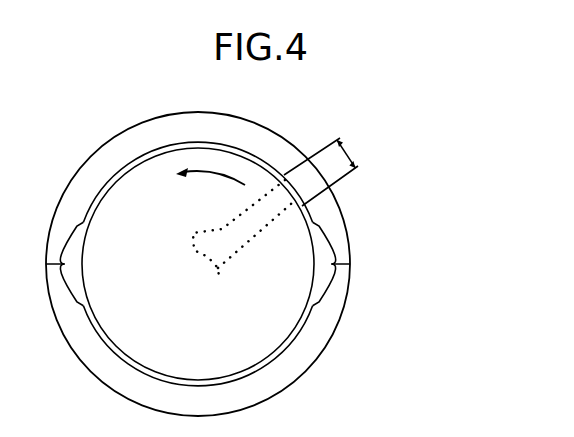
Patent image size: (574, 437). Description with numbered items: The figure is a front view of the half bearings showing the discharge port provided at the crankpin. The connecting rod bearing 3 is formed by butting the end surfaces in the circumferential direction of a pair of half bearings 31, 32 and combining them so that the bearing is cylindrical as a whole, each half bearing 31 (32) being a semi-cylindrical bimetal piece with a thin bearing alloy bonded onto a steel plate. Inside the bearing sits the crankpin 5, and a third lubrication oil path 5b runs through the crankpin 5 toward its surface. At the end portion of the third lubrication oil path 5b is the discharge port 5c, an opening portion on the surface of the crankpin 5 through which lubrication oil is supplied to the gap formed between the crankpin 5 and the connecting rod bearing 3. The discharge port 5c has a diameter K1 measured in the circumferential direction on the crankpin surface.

The connecting rod bearing 3 is at (404, 246).
The half bearing 31 is at (343, 220).
The half bearing 32 is at (342, 307).
The crankpin 5 is at (268, 343).
The third lubrication oil path 5b is at (200, 221).
The discharge port 5c is at (300, 162).
The diameter of discharge port K1 is at (333, 166).